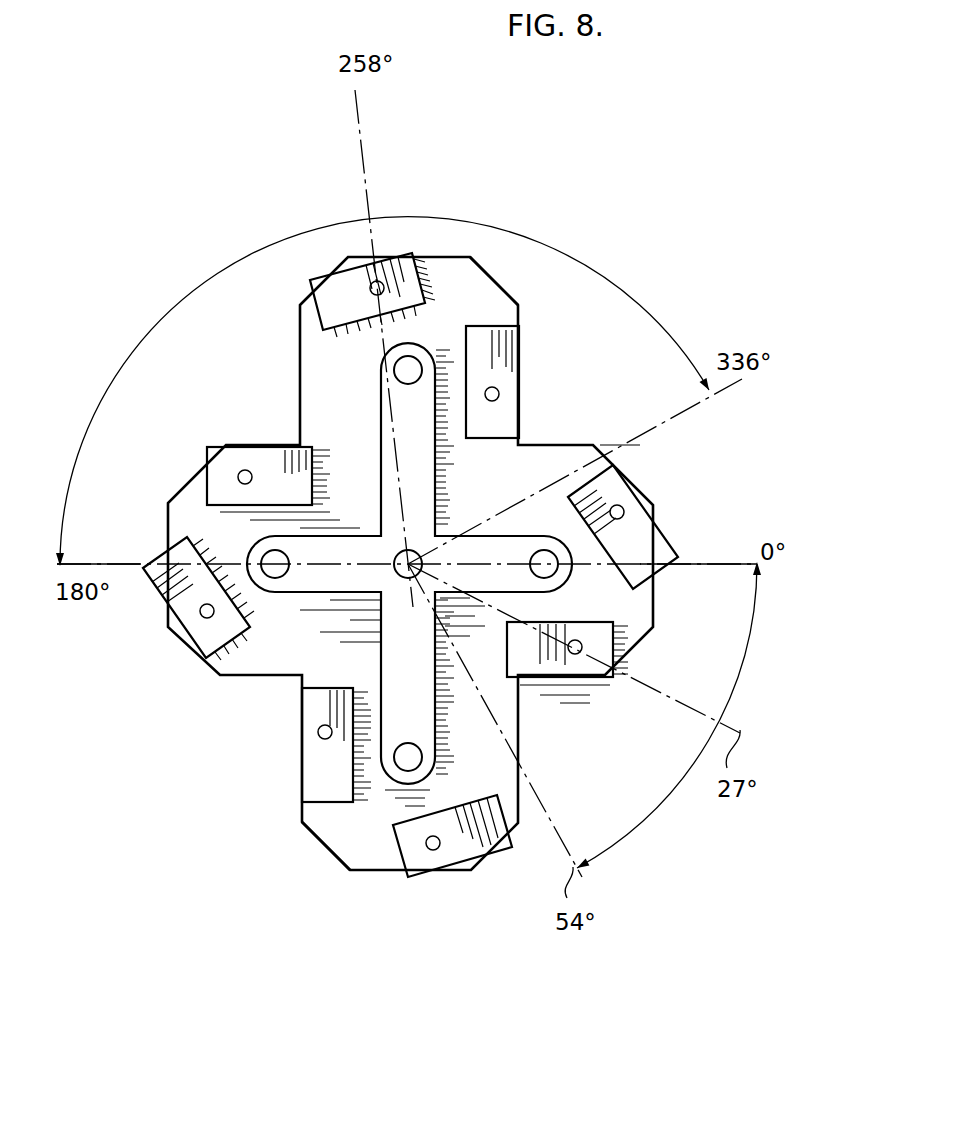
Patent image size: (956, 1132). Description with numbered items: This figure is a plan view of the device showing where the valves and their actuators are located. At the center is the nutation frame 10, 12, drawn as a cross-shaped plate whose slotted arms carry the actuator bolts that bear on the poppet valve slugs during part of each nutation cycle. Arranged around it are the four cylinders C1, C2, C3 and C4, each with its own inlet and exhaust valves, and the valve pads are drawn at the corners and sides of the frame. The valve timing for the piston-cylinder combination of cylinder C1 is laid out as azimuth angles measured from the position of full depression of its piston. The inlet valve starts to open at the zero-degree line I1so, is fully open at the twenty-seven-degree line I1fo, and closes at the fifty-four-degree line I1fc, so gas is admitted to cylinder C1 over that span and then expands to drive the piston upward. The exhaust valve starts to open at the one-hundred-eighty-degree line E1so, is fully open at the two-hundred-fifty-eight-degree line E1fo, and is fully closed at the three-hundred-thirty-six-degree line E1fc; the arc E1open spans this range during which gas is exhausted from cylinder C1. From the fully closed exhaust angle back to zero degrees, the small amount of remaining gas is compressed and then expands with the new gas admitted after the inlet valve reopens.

The frame 10 is at (528, 548).
The frame 12 is at (407, 442).
The cylinder C1 is at (653, 487).
The cylinder C2 is at (300, 839).
The cylinder C3 is at (151, 531).
The cylinder C4 is at (500, 277).
The exhaust valve E1 fully open position E1fo is at (363, 172).
The exhaust valve E1 fully closed position E1fc is at (673, 415).
The exhaust valve E1 start-open position E1so is at (115, 566).
The exhaust valve E1 open range E1open is at (178, 298).
The inlet valve I1 fully open position I1fo is at (645, 683).
The inlet valve I1 fully closed position I1fc is at (537, 802).
The inlet valve I1 start-open position I1so is at (707, 563).